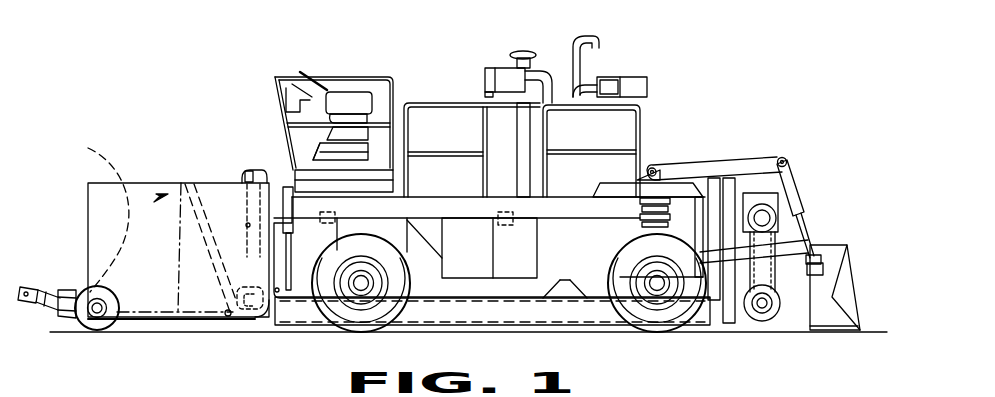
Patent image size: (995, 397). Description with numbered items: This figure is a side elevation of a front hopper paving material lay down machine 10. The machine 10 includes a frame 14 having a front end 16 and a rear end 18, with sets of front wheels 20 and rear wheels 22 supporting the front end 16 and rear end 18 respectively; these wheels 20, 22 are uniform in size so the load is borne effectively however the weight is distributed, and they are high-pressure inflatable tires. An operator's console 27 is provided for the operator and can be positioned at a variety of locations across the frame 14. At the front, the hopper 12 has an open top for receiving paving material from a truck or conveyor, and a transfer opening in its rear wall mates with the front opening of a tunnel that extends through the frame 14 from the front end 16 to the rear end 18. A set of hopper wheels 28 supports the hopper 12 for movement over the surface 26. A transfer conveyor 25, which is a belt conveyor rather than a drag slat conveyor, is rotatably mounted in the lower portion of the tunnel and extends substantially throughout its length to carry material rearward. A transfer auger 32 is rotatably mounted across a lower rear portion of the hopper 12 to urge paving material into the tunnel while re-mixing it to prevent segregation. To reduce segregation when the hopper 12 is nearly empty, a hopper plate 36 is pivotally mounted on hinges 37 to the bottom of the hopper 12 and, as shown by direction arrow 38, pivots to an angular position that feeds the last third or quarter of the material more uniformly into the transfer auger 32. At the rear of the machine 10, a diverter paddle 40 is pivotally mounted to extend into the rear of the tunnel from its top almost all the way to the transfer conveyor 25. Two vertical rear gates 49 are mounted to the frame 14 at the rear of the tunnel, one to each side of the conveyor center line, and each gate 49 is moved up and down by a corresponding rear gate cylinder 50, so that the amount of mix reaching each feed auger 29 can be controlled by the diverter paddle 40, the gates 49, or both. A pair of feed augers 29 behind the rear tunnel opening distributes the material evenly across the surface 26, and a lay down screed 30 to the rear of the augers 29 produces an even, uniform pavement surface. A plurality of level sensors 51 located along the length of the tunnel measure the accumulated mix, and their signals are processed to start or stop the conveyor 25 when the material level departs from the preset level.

The paving material lay down machine 10 is at (137, 133).
The front hopper 12 is at (225, 172).
The frame 14 is at (445, 200).
The front end 16 is at (290, 187).
The rear end 18 is at (711, 196).
The front wheels 20 is at (356, 316).
The rear wheels 22 is at (670, 305).
The transfer conveyor 25 is at (452, 315).
The surface 26 is at (133, 333).
The operator's console 27 is at (292, 90).
The hopper wheels 28 is at (90, 320).
The feed augers 29 is at (765, 308).
The lay down screed 30 is at (828, 310).
The transfer auger 32 is at (248, 320).
The hopper plate 36 is at (212, 215).
The hinges 37 is at (217, 327).
The direction arrow 38 is at (162, 230).
The diverter paddle 40 is at (692, 217).
The rear gates 49 is at (786, 244).
The rear gate cylinder 50 is at (680, 237).
The level sensors 51 is at (337, 211).